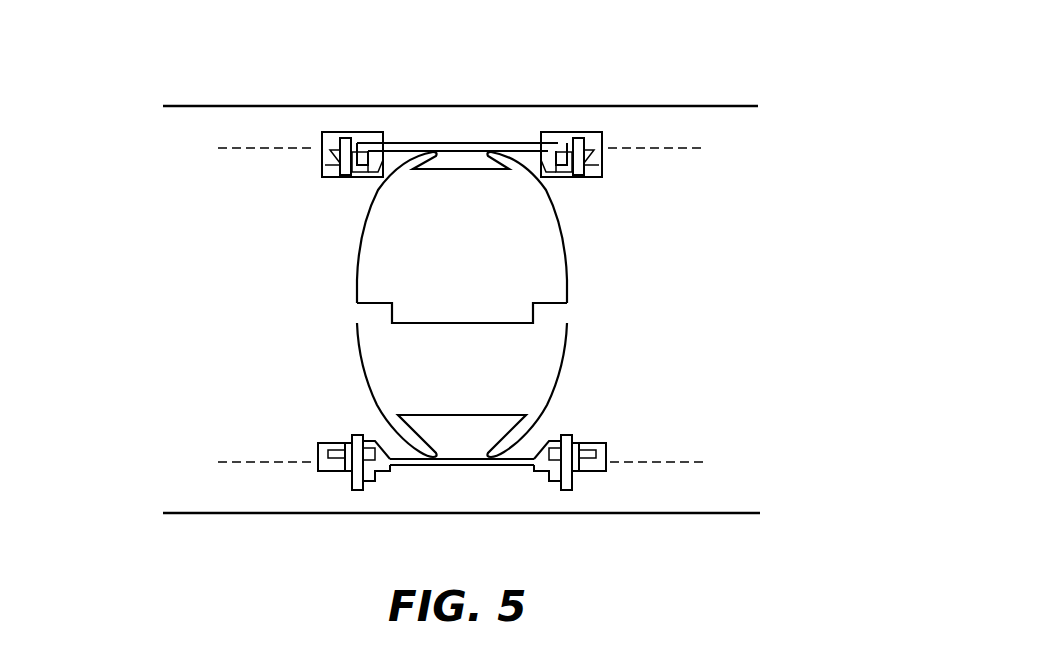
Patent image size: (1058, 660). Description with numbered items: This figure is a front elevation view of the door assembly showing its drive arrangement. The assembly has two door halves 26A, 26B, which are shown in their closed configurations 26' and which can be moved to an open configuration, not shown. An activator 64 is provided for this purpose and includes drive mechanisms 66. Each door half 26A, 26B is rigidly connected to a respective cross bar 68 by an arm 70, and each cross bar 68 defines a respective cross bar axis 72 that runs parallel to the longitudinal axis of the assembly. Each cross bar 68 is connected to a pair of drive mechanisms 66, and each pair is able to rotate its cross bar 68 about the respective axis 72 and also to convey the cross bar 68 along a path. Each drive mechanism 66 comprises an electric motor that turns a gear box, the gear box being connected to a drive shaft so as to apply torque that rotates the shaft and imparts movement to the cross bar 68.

The closed configuration 26' is at (356, 304).
The door half 26A is at (548, 333).
The door half 26B is at (548, 248).
The activator 64 is at (372, 486).
The drive mechanism 66 is at (347, 442).
The cross bar 68 is at (425, 143).
The arm 70 is at (470, 157).
The cross bar axis 72 is at (663, 148).